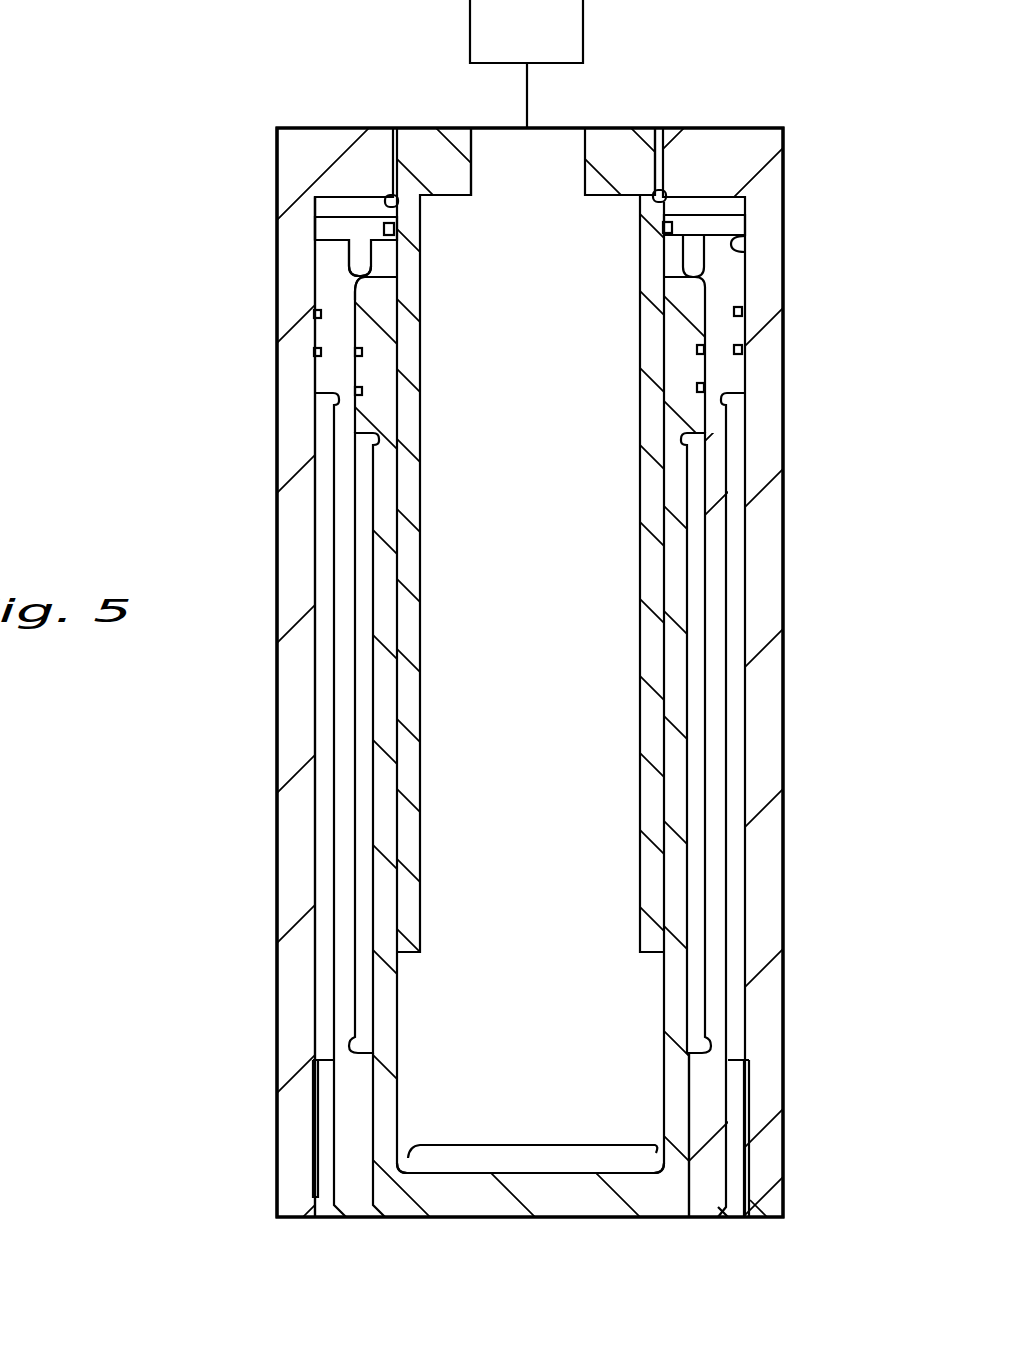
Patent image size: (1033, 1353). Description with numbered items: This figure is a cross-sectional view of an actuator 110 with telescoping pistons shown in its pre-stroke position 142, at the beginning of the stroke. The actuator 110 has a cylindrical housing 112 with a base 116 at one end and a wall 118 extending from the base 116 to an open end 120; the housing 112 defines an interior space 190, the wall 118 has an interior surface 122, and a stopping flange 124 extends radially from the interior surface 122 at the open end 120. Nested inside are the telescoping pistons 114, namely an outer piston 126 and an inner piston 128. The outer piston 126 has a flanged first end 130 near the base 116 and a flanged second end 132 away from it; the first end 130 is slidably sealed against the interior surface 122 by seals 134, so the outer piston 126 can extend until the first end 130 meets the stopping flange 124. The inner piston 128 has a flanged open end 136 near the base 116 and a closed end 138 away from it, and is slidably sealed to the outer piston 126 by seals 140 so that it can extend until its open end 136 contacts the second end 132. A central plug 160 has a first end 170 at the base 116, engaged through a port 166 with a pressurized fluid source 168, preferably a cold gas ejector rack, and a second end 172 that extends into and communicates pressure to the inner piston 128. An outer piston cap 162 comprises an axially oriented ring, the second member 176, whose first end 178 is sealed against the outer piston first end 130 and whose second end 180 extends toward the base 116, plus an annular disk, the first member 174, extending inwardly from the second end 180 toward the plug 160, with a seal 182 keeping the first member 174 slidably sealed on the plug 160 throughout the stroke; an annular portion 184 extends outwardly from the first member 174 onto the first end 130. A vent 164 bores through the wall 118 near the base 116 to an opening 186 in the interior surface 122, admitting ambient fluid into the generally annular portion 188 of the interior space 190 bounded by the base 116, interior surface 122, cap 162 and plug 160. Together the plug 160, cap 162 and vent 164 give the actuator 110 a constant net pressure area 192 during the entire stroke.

The actuator 110 is at (846, 127).
The cylindrical housing 112 is at (284, 800).
The telescoping pistons 114 is at (335, 1257).
The base 116 is at (757, 128).
The wall 118 is at (297, 876).
The open end 120 is at (784, 1217).
The interior surface 122 is at (318, 722).
The stopping flange 124 is at (752, 1120).
The outer piston 126 is at (727, 518).
The inner piston 128 is at (690, 585).
The flanged first end 130 is at (742, 253).
The flanged second end 132 is at (705, 1218).
The seals 134 is at (740, 350).
The flanged open end 136 is at (353, 290).
The closed end 138 is at (496, 1218).
The seals 140 is at (355, 352).
The pre-stroke position 142 is at (250, 988).
The central plug 160 is at (422, 715).
The outer piston cap 162 is at (727, 200).
The vent 164 is at (330, 217).
The port 166 is at (567, 128).
The pressurized fluid source 168 is at (514, 42).
The first end 170 is at (440, 135).
The second end 172 is at (421, 952).
The first member 174 is at (403, 202).
The second member 176 is at (400, 267).
The first end 178 is at (345, 270).
The second end 180 is at (352, 250).
The seal 182 is at (663, 228).
The annular portion 184 is at (340, 213).
The opening 186 is at (303, 200).
The portion 188 is at (367, 195).
The interior space 190 is at (550, 494).
The constant net pressure area 192 is at (557, 1145).